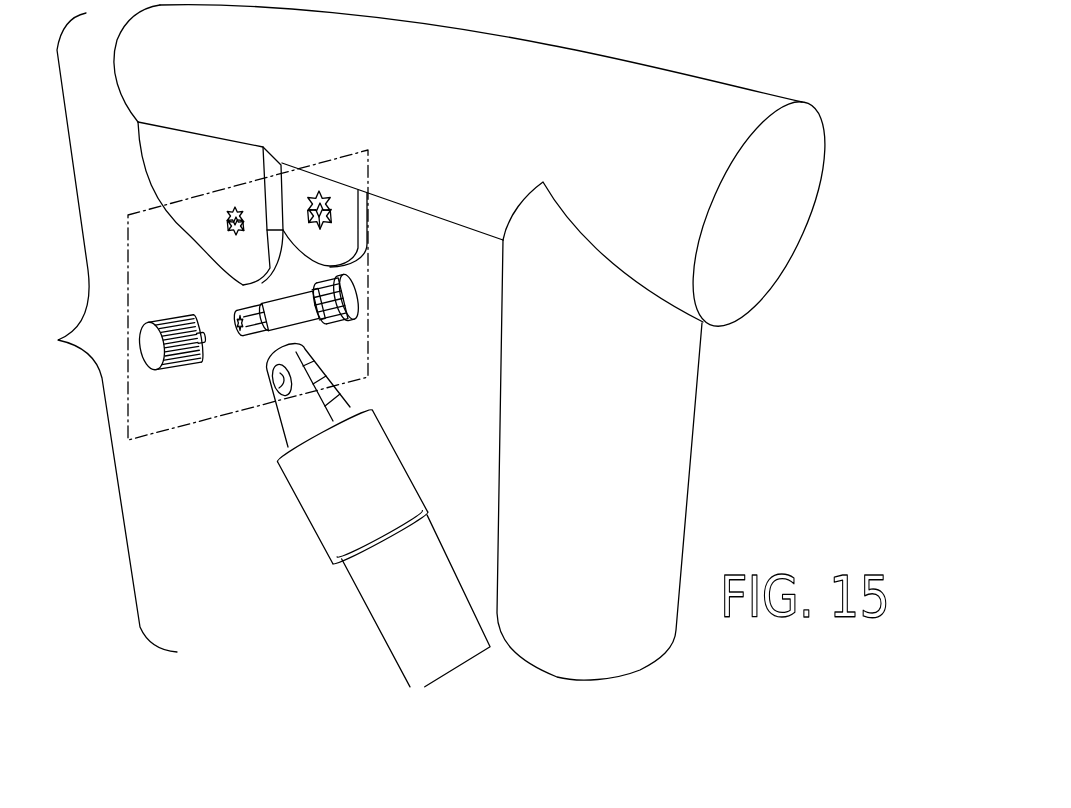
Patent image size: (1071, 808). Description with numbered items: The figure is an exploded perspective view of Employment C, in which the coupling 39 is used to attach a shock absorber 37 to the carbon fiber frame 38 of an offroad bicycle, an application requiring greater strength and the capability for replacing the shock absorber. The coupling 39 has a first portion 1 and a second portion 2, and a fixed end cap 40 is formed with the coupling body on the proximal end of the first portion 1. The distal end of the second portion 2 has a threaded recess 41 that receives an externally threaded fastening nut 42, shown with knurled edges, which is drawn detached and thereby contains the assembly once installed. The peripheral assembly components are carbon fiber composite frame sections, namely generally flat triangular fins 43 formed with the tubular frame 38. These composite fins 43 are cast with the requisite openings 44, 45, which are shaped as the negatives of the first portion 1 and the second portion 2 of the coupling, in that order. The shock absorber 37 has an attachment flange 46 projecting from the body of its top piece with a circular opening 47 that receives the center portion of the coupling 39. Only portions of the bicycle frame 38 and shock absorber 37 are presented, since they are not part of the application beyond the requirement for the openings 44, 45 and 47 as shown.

The carbon fiber frame 38 is at (438, 112).
The triangular fins 43 is at (176, 154).
The opening 44 is at (333, 202).
The opening 45 is at (227, 218).
The fastening nut 42 is at (153, 343).
The threaded recess 41 is at (239, 316).
The coupling 39 is at (291, 308).
The first portion 1 is at (342, 310).
The second portion 2 is at (255, 332).
The fixed end cap 40 is at (353, 295).
The shock absorber 37 is at (350, 475).
The attachment flange 46 is at (298, 413).
The circular opening 47 is at (280, 383).